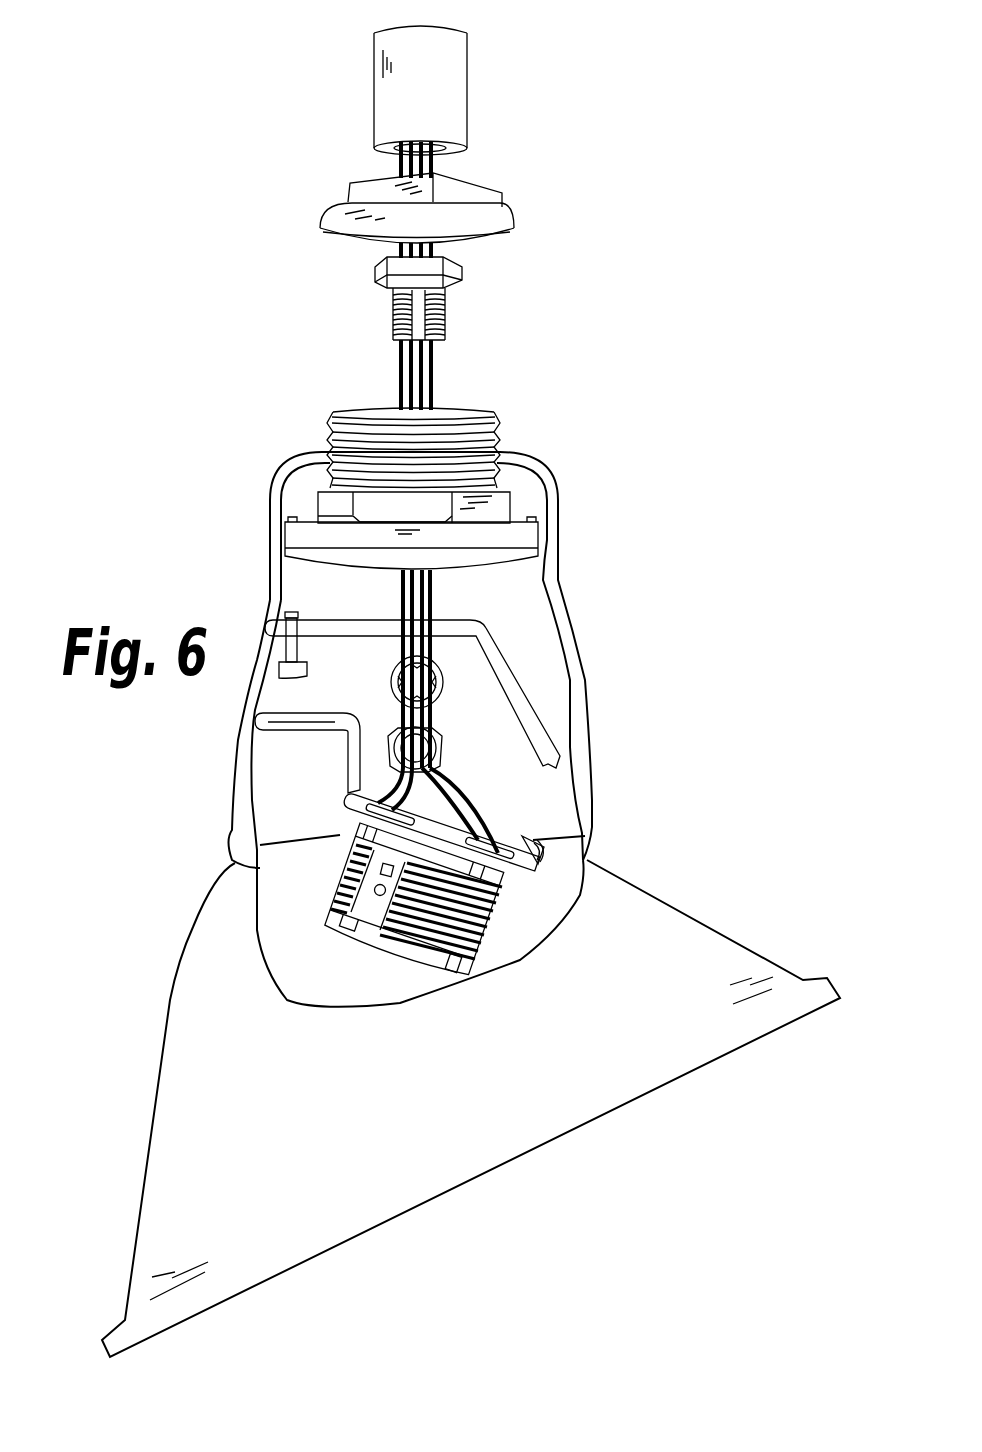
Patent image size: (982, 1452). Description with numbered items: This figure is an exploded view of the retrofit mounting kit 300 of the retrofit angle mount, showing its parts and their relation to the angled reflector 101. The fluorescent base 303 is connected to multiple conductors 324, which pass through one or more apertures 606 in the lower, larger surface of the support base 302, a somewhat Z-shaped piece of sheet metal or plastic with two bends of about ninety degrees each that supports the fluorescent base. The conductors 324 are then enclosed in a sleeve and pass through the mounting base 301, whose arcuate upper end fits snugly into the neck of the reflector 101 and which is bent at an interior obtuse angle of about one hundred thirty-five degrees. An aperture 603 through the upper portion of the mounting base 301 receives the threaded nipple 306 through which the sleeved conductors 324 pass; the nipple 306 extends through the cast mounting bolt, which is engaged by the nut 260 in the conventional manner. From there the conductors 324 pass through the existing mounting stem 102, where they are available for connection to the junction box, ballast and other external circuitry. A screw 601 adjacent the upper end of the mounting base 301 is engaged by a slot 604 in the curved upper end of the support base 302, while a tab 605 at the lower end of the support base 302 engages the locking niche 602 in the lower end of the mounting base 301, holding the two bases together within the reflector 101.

The reflector 101 is at (210, 922).
The existing mounting stem 102 is at (447, 85).
The nut 260 is at (500, 227).
The retrofit mounting kit 300 is at (600, 348).
The mounting base 301 is at (527, 685).
The support base 302 is at (533, 865).
The fluorescent base 303 is at (480, 920).
The threaded nipple 306 is at (450, 282).
The conductors 324 is at (440, 378).
The screw 601 is at (290, 647).
The locking niche 602 is at (548, 762).
The aperture 603 is at (470, 628).
The slot 604 is at (263, 720).
The tab 605 is at (550, 855).
The apertures 606 is at (552, 842).